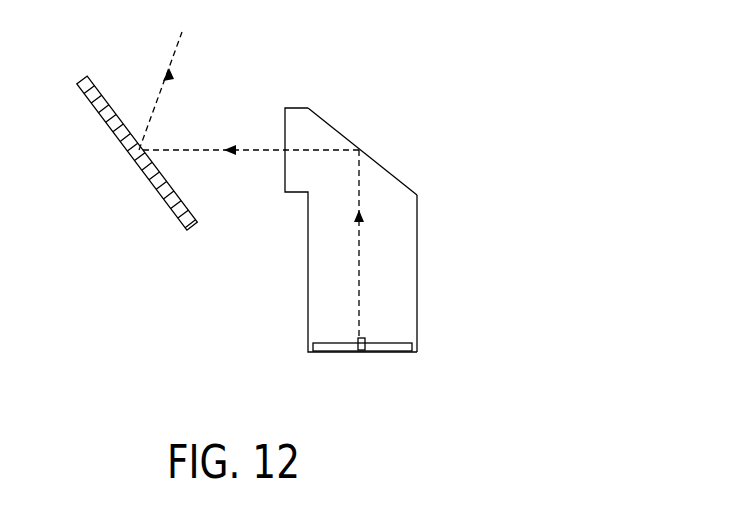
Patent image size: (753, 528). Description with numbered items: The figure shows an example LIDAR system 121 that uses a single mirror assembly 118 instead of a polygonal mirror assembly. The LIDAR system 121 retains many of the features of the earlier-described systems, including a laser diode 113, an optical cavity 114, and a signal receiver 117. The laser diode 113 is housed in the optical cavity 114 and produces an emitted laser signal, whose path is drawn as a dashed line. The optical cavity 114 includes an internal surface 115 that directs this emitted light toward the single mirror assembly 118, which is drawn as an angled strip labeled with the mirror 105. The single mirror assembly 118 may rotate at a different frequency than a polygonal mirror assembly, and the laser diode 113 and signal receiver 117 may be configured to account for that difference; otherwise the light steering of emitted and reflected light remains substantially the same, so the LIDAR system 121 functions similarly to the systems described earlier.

The single mirror assembly 118 is at (66, 60).
The mirror 105 is at (104, 123).
The LIDAR system 121 is at (386, 72).
The internal surface 115 is at (398, 182).
The optical cavity 114 is at (418, 272).
The signal receiver 117 is at (400, 352).
The laser diode 113 is at (362, 352).